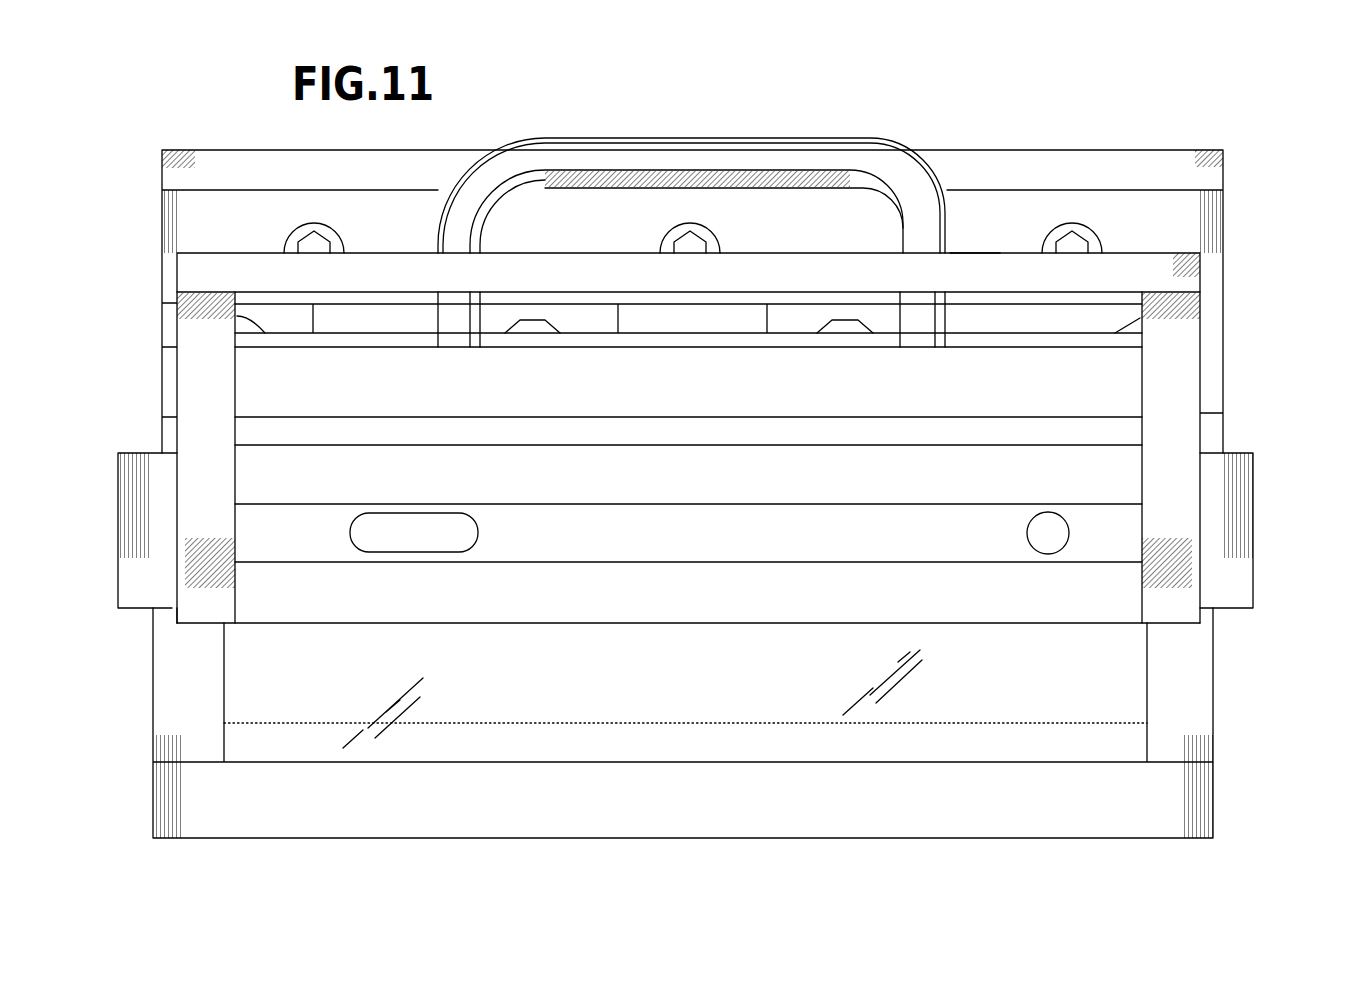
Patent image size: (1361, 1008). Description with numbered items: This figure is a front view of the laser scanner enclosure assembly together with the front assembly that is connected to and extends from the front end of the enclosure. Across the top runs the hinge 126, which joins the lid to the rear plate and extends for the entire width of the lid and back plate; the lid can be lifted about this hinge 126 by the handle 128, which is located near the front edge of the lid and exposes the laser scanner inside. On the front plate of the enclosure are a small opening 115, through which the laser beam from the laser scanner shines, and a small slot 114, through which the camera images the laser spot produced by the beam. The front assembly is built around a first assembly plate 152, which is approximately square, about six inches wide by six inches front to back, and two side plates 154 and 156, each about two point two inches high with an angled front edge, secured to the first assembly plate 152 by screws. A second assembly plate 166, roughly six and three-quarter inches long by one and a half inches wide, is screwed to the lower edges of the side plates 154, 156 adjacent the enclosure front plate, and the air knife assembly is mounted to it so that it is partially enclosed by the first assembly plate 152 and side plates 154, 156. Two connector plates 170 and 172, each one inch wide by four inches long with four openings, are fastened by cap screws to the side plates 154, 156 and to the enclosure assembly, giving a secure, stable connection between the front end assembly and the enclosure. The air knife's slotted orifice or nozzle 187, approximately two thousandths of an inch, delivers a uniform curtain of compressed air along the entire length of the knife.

The slot 114 is at (368, 523).
The opening 115 is at (1055, 528).
The hinge 126 is at (1208, 230).
The handle 128 is at (690, 148).
The first assembly plate 152 is at (693, 598).
The side plate 154 is at (200, 357).
The side plate 156 is at (1185, 520).
The second assembly plate 166 is at (972, 268).
The connector plate 170 is at (130, 468).
The connector plate 172 is at (1253, 506).
The slotted orifice or nozzle 187 is at (1123, 428).